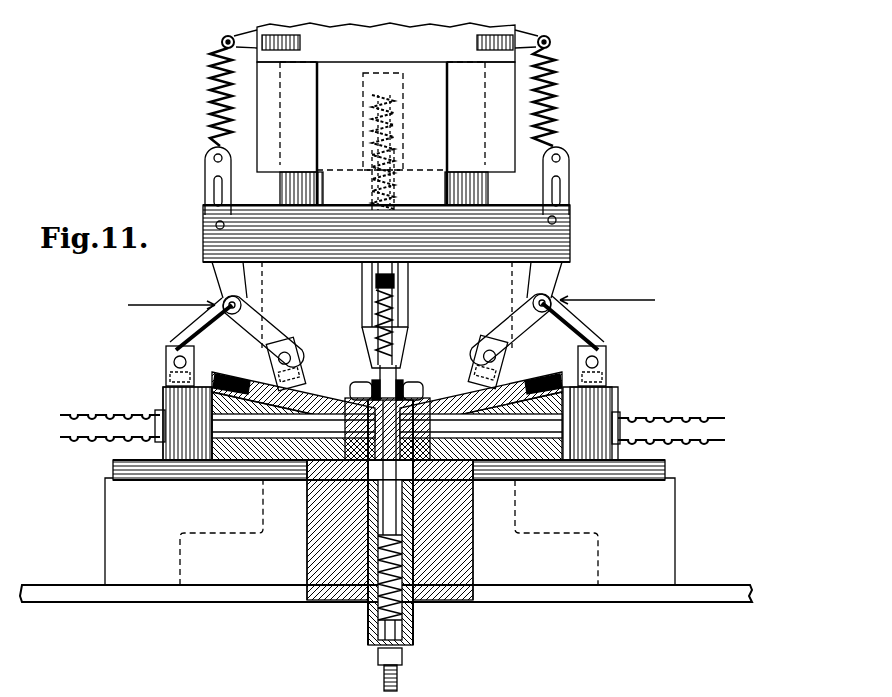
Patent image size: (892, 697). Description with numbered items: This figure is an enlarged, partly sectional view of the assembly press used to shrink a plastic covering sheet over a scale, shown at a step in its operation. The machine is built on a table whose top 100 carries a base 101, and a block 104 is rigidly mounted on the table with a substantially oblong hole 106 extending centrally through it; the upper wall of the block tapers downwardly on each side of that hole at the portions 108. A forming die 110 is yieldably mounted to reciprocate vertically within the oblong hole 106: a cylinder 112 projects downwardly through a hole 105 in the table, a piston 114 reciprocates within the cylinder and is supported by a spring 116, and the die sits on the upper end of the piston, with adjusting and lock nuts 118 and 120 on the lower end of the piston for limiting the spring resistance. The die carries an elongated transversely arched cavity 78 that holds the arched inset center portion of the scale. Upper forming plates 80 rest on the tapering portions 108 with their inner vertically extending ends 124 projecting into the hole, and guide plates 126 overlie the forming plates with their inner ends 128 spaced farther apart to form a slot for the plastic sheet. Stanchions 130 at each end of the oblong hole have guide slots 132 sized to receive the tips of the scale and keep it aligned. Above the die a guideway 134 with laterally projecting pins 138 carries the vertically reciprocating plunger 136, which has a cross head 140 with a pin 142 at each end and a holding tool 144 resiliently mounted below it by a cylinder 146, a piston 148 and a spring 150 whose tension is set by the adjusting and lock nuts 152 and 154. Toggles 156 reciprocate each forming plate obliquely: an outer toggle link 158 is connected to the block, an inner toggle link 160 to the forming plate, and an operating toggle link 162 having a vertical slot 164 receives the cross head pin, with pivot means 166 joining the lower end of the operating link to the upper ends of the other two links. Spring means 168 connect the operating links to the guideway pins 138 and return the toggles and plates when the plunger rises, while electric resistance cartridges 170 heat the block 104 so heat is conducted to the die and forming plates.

The transversely arched cavity 78 is at (338, 482).
The upper forming plates 80 is at (268, 380).
The table top 100 is at (592, 594).
The base 101 is at (660, 548).
The block 104 is at (618, 388).
The hole in table 105 is at (600, 470).
The oblong hole 106 is at (290, 470).
The tapering upper wall portions 108 is at (525, 445).
The forming die 110 is at (322, 472).
The cylinder 112 is at (408, 520).
The piston 114 is at (398, 496).
The spring 116 is at (408, 556).
The adjusting nut 118 is at (404, 652).
The lock nut 120 is at (400, 672).
The inner vertically extending ends 124 is at (342, 384).
The guide plates 126 is at (300, 352).
The inner ends of guide plates 128 is at (340, 360).
The stanchions 130 is at (355, 345).
The guide slot 132 is at (360, 332).
The guideway 134 is at (318, 40).
The plunger 136 is at (442, 112).
The guideway pins 138 is at (221, 43).
The cross head 140 is at (437, 254).
The cross head pins 142 is at (213, 222).
The holding tool 144 is at (412, 352).
The cylinder 146 is at (408, 278).
The piston 148 is at (410, 316).
The spring 150 is at (370, 175).
The adjusting nut 152 is at (400, 128).
The lock nut 154 is at (396, 118).
The toggles 156 is at (393, 298).
The outer toggle link 158 is at (195, 335).
The inner toggle link 160 is at (268, 312).
The operating toggle link 162 is at (218, 268).
The vertical slot 164 is at (214, 180).
The pivot means 166 is at (222, 300).
The spring means 168 is at (212, 100).
The electric resistance cartridges 170 is at (622, 420).